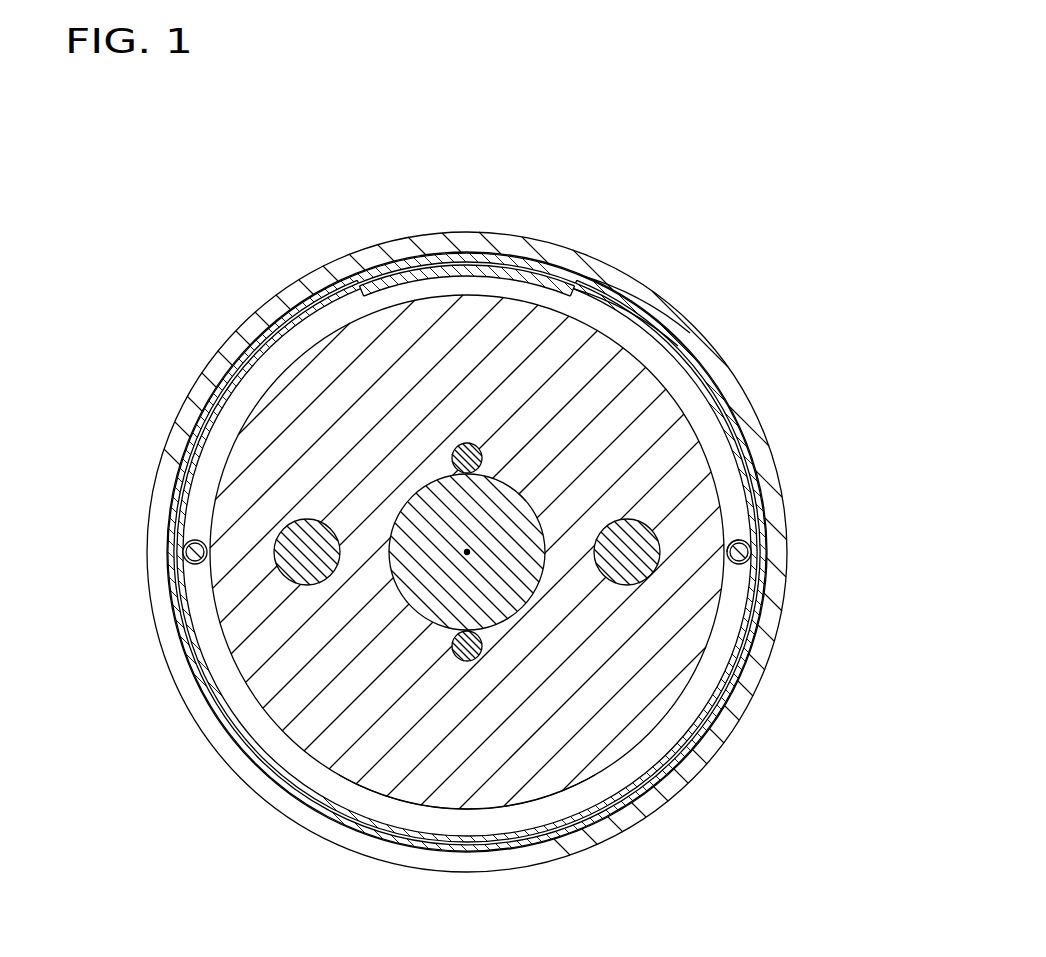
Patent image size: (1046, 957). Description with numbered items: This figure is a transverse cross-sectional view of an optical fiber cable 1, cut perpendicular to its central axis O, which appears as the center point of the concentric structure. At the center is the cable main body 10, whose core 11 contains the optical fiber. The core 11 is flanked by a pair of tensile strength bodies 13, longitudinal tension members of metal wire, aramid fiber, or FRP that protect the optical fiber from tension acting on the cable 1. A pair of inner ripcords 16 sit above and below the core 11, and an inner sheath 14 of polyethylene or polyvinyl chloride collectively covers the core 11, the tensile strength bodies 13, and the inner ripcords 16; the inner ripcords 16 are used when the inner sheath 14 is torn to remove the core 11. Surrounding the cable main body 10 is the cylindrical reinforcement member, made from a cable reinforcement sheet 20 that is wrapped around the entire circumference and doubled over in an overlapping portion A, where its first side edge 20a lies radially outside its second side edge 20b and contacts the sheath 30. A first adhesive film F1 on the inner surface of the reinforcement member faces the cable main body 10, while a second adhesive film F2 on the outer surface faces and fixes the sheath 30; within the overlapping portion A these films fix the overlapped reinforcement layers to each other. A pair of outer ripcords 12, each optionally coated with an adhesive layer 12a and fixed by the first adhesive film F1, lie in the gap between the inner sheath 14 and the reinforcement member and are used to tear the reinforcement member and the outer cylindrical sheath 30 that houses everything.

The cable 1 is at (160, 200).
The cable main body 10 is at (468, 792).
The core 11 is at (423, 595).
The outer ripcord 12 is at (740, 553).
The adhesive layer 12a is at (737, 539).
The tensile strength body 13 is at (300, 575).
The inner sheath 14 is at (558, 760).
The inner ripcord 16 is at (455, 455).
The cable reinforcement sheet 20 is at (593, 297).
The first side edge 20a is at (357, 287).
The second side edge 20b is at (580, 297).
The sheath 30 is at (757, 437).
The first adhesive film F1 is at (610, 337).
The second adhesive film F2 is at (627, 307).
The overlapping portion A is at (577, 262).
The central axis O is at (467, 552).